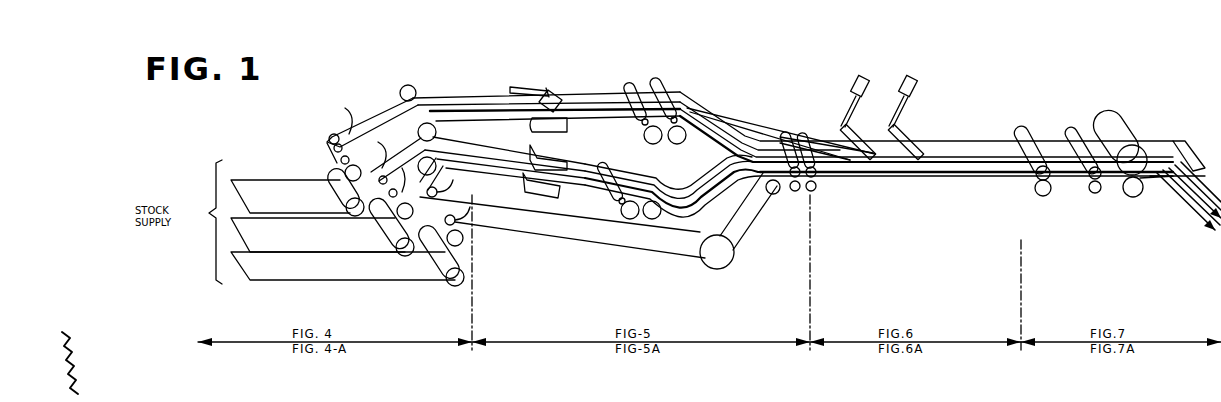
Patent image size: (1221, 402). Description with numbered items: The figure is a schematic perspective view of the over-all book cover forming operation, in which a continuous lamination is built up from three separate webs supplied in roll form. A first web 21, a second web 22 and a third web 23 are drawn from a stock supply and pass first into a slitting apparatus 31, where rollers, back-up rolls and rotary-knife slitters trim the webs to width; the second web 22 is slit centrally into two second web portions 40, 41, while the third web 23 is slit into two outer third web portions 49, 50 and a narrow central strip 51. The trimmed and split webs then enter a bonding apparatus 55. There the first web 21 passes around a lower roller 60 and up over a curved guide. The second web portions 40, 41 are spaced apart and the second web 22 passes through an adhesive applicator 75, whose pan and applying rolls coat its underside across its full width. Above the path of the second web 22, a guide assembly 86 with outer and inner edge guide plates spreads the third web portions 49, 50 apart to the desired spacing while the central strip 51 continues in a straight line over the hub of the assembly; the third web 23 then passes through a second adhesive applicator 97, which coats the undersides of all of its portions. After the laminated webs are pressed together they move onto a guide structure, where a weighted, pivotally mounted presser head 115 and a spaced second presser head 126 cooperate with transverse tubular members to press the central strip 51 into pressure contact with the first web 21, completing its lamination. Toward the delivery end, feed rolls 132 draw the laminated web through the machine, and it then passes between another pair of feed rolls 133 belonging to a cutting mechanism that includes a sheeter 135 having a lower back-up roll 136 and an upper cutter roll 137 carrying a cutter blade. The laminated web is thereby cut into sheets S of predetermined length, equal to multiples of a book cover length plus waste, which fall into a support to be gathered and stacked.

The first web 21 is at (280, 280).
The second web 22 is at (305, 244).
The third web 23 is at (275, 183).
The slitting apparatus 31 is at (370, 110).
The second web portion 40 is at (582, 184).
The second web portion 41 is at (577, 168).
The third web portion 49 is at (612, 121).
The third web portion 50 is at (578, 96).
The central strip 51 is at (736, 118).
The bonding apparatus 55 is at (695, 100).
The lower roller 60 is at (726, 262).
The adhesive applicator 75 is at (655, 179).
The guide assembly 86 is at (552, 84).
The adhesive applicator 97 is at (638, 78).
The presser head 115 is at (864, 130).
The second presser head 126 is at (916, 138).
The feed rolls 132 is at (1022, 124).
The feed rolls 133 is at (1068, 125).
The sheeter 135 is at (1150, 112).
The lower back-up roll 136 is at (1132, 198).
The upper cutter roll 137 is at (1112, 110).
The sheets S is at (1204, 206).